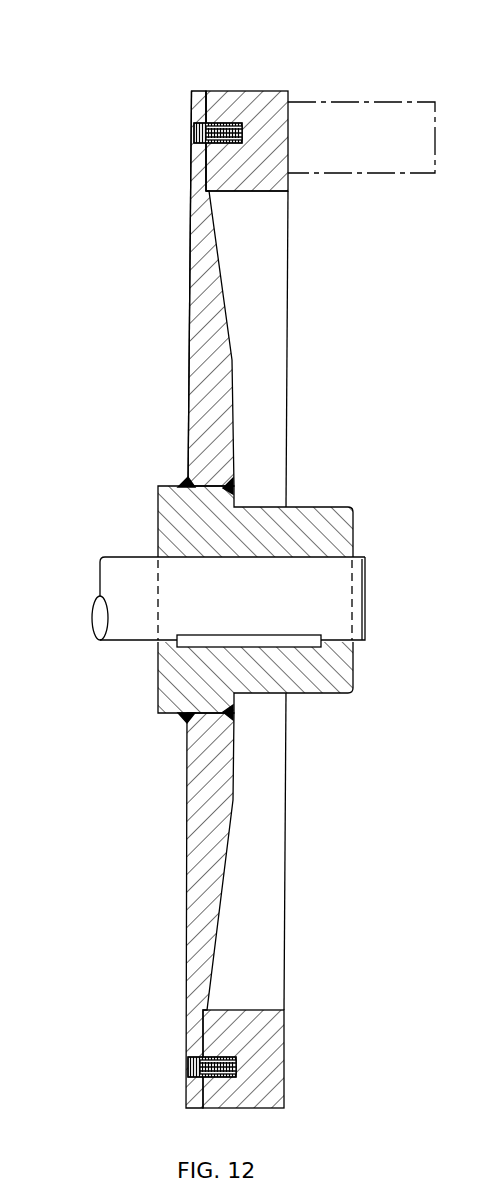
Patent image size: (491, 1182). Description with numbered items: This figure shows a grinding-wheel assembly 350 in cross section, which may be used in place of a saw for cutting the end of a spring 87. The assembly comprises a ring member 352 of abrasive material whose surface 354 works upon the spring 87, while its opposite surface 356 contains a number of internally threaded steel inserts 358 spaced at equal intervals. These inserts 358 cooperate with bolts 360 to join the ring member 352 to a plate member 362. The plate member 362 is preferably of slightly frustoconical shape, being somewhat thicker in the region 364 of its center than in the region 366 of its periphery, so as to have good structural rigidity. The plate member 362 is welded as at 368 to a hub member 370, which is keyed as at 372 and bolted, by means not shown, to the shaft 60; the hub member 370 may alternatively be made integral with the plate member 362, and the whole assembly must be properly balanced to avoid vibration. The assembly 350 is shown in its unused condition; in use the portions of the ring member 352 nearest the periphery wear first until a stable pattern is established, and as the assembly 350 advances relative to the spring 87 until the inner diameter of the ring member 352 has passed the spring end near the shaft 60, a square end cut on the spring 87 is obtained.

The grinding-wheel assembly 350 is at (112, 719).
The ring member 352 is at (238, 91).
The surface 354 is at (290, 178).
The opposite surface 356 is at (207, 110).
The internally threaded steel inserts 358 is at (222, 124).
The bolts 360 is at (195, 135).
The plate member 362 is at (200, 270).
The region of center 364 is at (236, 412).
The region of periphery 366 is at (188, 217).
The weld 368 is at (186, 478).
The hub member 370 is at (353, 530).
The key 372 is at (308, 643).
The shaft 60 is at (104, 557).
The spring 87 is at (342, 102).